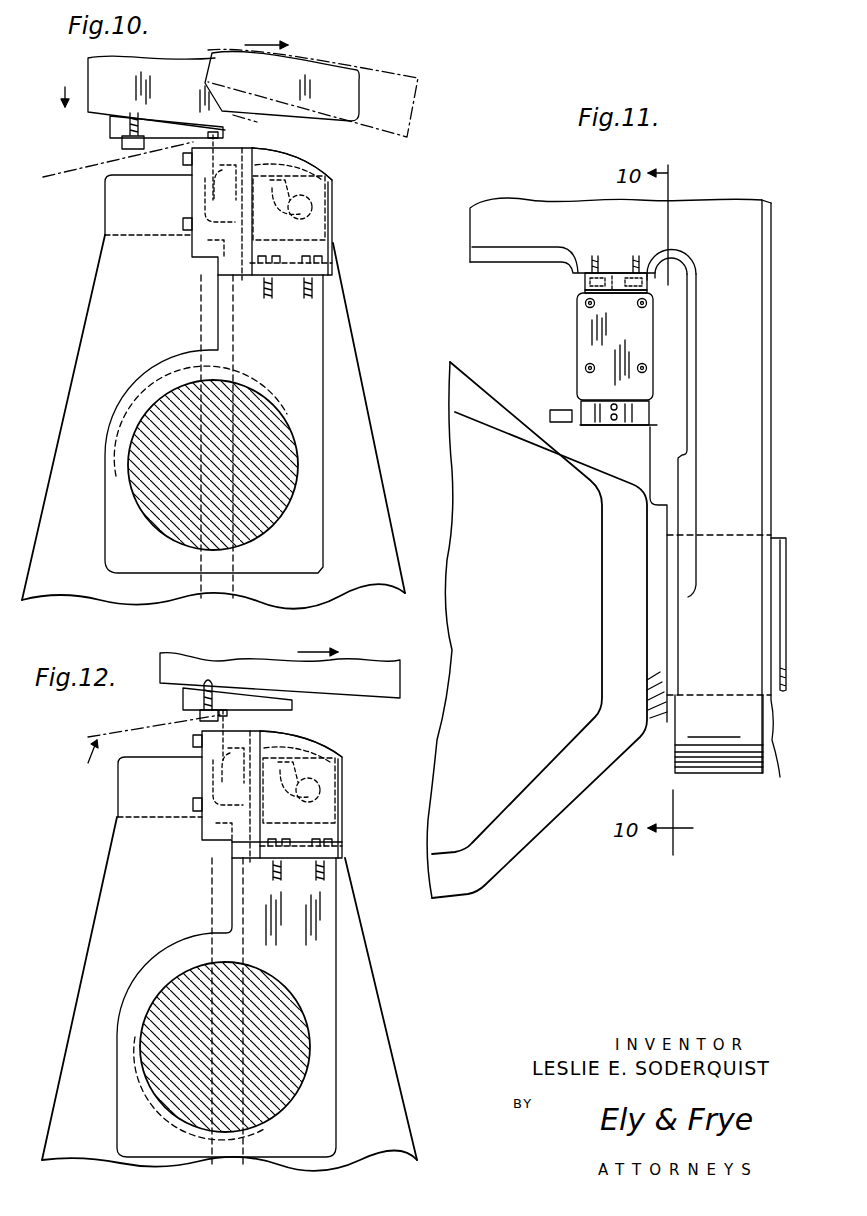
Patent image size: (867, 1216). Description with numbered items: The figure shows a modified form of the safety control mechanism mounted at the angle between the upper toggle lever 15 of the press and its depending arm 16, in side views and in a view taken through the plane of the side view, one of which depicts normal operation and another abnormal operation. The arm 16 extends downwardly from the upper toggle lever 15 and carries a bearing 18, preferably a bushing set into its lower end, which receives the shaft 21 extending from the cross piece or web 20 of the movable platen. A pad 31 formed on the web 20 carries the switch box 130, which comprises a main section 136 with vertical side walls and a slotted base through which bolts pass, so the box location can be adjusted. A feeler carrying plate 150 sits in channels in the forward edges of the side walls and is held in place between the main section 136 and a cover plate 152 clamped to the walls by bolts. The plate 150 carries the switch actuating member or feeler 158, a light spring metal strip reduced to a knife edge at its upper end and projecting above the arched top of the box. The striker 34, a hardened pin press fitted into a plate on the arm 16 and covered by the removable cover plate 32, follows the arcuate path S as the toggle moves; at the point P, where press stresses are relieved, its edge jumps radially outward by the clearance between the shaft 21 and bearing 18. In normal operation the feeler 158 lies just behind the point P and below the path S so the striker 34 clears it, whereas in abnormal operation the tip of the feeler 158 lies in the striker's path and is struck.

In FIG. 10, the upper toggle lever 15 is at (165, 83).
In FIG. 11, the upper toggle lever 15 is at (566, 210).
In FIG. 12, the upper toggle lever 15 is at (240, 675).
In FIG. 11, the arms 16 is at (703, 377).
In FIG. 10, the bearings 18 is at (260, 388).
In FIG. 11, the bearings 18 is at (703, 695).
In FIG. 12, the bearings 18 is at (287, 1113).
In FIG. 10, the cross piece or web 20 is at (370, 479).
In FIG. 11, the cross piece or web 20 is at (537, 828).
In FIG. 12, the cross piece or web 20 is at (378, 1006).
In FIG. 10, the shafts 21 is at (283, 437).
In FIG. 11, the shafts 21 is at (722, 670).
In FIG. 12, the shafts 21 is at (272, 988).
In FIG. 10, the pad 31 is at (323, 300).
In FIG. 11, the pad 31 is at (637, 441).
In FIG. 12, the pad 31 is at (226, 1013).
In FIG. 10, the cover plate 32 is at (110, 124).
In FIG. 11, the cover plate 32 is at (650, 262).
In FIG. 12, the cover plate 32 is at (183, 699).
In FIG. 10, the striker 34 is at (122, 141).
In FIG. 11, the striker 34 is at (585, 283).
In FIG. 12, the striker 34 is at (200, 715).
In FIG. 10, the switch box 130 is at (332, 216).
In FIG. 11, the switch box 130 is at (585, 337).
In FIG. 12, the switch box 130 is at (342, 798).
In FIG. 10, the main section 136 is at (313, 166).
In FIG. 12, the main section 136 is at (319, 757).
In FIG. 12, the feeler carrying plate 150 is at (245, 848).
In FIG. 10, the cover plate 152 is at (192, 206).
In FIG. 12, the cover plate 152 is at (202, 784).
In FIG. 11, the switch actuating member or feeler 158 is at (615, 273).
In FIG. 12, the switch actuating member or feeler 158 is at (224, 724).
In FIG. 10, the point P is at (200, 143).
In FIG. 10, the path of the striker S is at (95, 168).
In FIG. 12, the path of the striker S is at (146, 749).